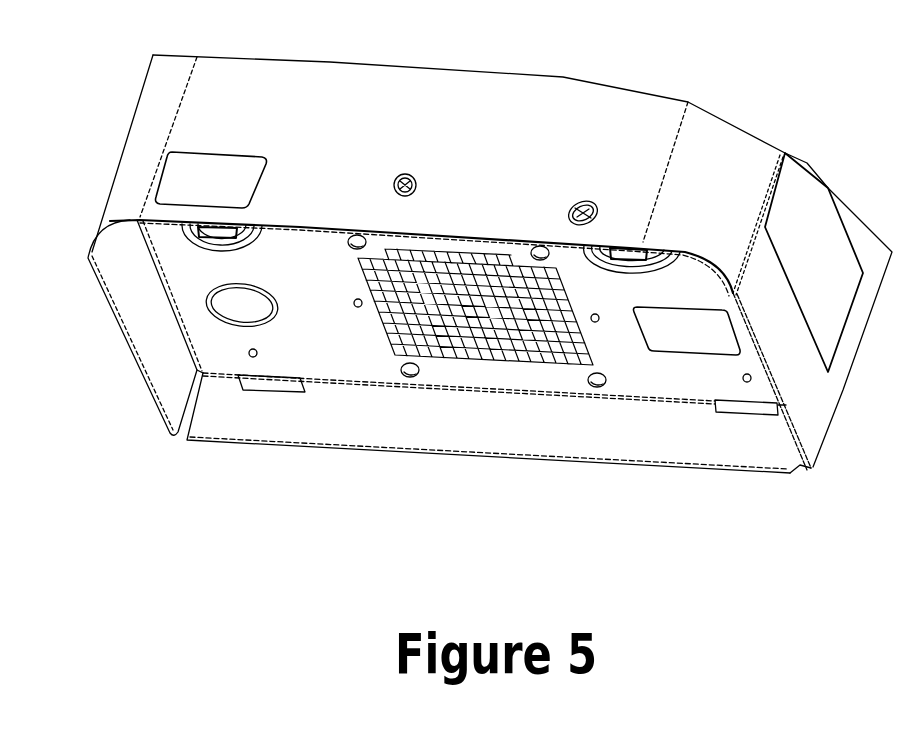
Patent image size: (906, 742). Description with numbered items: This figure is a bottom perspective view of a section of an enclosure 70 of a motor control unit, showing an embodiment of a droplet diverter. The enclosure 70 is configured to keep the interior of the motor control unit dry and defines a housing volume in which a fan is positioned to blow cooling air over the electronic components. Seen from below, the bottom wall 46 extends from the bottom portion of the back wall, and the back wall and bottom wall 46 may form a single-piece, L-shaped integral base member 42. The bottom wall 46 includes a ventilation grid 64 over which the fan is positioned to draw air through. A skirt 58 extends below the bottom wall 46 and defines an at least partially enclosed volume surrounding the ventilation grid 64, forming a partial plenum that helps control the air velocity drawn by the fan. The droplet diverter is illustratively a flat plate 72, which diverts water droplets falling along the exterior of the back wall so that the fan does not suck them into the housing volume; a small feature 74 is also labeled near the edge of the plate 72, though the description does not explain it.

The enclosure 70 is at (113, 88).
The skirt 58 is at (165, 393).
The plate 72 is at (305, 447).
The bottom wall 46 is at (360, 355).
The ventilation grid 64 is at (478, 372).
The base member 42 is at (488, 416).
The tab 74 is at (735, 410).